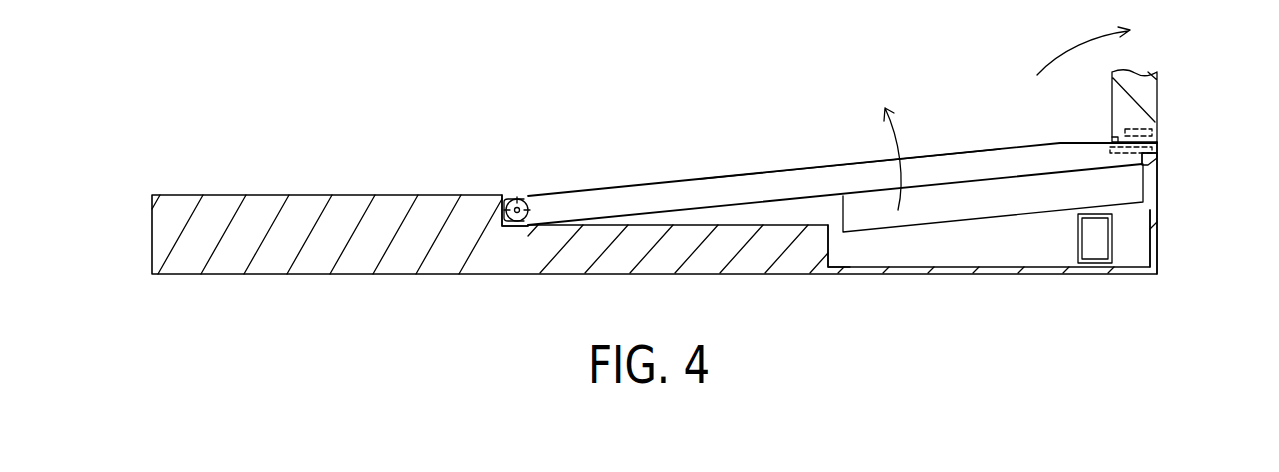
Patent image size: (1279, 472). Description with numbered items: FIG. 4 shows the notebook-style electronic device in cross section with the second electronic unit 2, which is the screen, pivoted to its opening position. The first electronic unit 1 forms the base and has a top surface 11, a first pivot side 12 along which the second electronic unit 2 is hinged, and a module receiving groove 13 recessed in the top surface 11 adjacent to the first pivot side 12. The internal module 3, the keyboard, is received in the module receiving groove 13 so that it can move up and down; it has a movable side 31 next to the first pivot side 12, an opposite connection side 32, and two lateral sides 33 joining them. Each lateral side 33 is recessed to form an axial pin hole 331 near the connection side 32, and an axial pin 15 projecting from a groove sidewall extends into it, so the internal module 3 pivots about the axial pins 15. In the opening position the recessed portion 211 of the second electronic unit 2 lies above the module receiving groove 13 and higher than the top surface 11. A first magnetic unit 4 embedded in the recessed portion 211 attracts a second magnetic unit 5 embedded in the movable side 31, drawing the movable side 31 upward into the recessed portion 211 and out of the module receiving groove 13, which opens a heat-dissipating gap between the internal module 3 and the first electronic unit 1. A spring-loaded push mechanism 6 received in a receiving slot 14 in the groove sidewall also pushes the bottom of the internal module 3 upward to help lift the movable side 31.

The first electronic unit 1 is at (177, 240).
The top surface 11 is at (316, 194).
The first pivot side 12 is at (1160, 246).
The module receiving groove 13 is at (830, 267).
The receiving slot 14 is at (1080, 240).
The axial pin 15 is at (520, 223).
The second electronic unit 2 is at (1150, 96).
The recessed portion 211 is at (1115, 140).
The internal module 3 is at (686, 192).
The movable side 31 is at (1153, 156).
The connection side 32 is at (505, 208).
The lateral side 33 is at (791, 183).
The axial pin hole 331 is at (522, 198).
The first magnetic unit 4 is at (1158, 129).
The second magnetic unit 5 is at (1158, 147).
The spring-loaded push mechanism 6 is at (1095, 247).